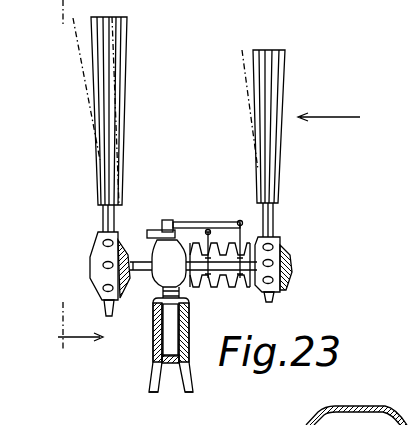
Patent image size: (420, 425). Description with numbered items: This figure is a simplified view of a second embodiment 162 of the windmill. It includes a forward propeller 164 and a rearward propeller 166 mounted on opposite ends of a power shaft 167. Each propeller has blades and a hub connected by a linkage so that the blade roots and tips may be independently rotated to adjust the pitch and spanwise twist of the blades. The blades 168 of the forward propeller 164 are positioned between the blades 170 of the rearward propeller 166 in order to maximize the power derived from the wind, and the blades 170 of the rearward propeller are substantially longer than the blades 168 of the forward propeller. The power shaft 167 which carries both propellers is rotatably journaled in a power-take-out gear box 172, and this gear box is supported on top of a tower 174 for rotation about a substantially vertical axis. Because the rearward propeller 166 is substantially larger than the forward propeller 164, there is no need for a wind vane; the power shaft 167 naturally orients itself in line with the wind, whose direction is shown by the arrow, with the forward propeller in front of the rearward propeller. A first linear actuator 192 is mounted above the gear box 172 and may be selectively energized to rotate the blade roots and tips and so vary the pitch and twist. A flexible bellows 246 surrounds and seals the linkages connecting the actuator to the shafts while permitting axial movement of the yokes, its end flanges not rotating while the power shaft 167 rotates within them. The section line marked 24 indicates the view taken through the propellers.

The section line 24- 24 is at (100, 330).
The blades of the rearward propeller 170 is at (122, 58).
The rearward propeller 166 is at (113, 208).
The power shaft 167 is at (143, 282).
The power-take-out gear box 172 is at (187, 291).
The flexible bellows 246 is at (238, 280).
The first linear actuator 192 is at (150, 222).
The second embodiment of the windmill 162 is at (164, 182).
The tower 174 is at (155, 368).
The blades of the forward propeller 168 is at (281, 74).
The forward propeller 164 is at (276, 212).